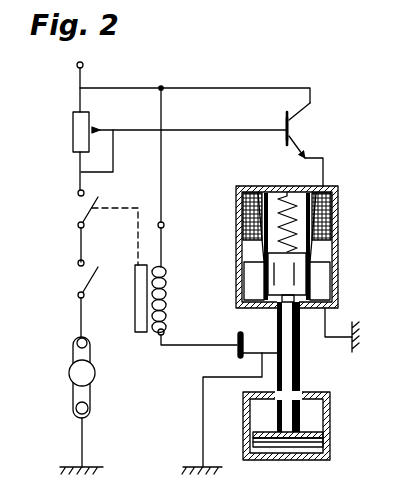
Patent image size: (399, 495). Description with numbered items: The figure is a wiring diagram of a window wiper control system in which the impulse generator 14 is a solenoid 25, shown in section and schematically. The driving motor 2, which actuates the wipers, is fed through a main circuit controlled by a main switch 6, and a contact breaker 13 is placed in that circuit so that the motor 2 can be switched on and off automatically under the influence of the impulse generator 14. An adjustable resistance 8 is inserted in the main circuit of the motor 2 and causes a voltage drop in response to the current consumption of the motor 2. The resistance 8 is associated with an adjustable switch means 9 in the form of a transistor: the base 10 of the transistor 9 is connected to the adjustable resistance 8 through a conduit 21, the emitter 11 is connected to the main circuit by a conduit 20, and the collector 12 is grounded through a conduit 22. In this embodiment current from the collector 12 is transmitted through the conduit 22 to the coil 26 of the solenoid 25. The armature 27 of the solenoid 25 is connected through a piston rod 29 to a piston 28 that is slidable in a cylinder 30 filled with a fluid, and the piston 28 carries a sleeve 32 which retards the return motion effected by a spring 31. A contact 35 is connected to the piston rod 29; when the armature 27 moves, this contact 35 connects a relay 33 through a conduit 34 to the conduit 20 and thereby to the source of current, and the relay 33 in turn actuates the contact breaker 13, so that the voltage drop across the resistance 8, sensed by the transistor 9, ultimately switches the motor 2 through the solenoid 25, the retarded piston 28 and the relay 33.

The driving motor 2 is at (68, 370).
The main switch 6 is at (89, 283).
The adjustable resistance 8 is at (71, 130).
The adjustable switch means 9 is at (331, 98).
The base 10 is at (284, 119).
The emitter 11 is at (306, 111).
The collector 12 is at (299, 146).
The contact breaker 13 is at (91, 206).
The impulse generator 14 is at (300, 226).
The conduit 20 is at (239, 86).
The conduit 21 is at (184, 131).
The conduit 22 is at (325, 175).
The solenoid 25 is at (339, 212).
The coil 26 is at (334, 230).
The armature 27 is at (307, 278).
The piston 28 is at (323, 432).
The piston rod 29 is at (300, 372).
The cylinder 30 is at (331, 452).
The spring 31 is at (268, 186).
The sleeve 32 is at (328, 441).
The relay 33 is at (136, 334).
The conduit 34 is at (182, 346).
The contact 35 is at (237, 352).